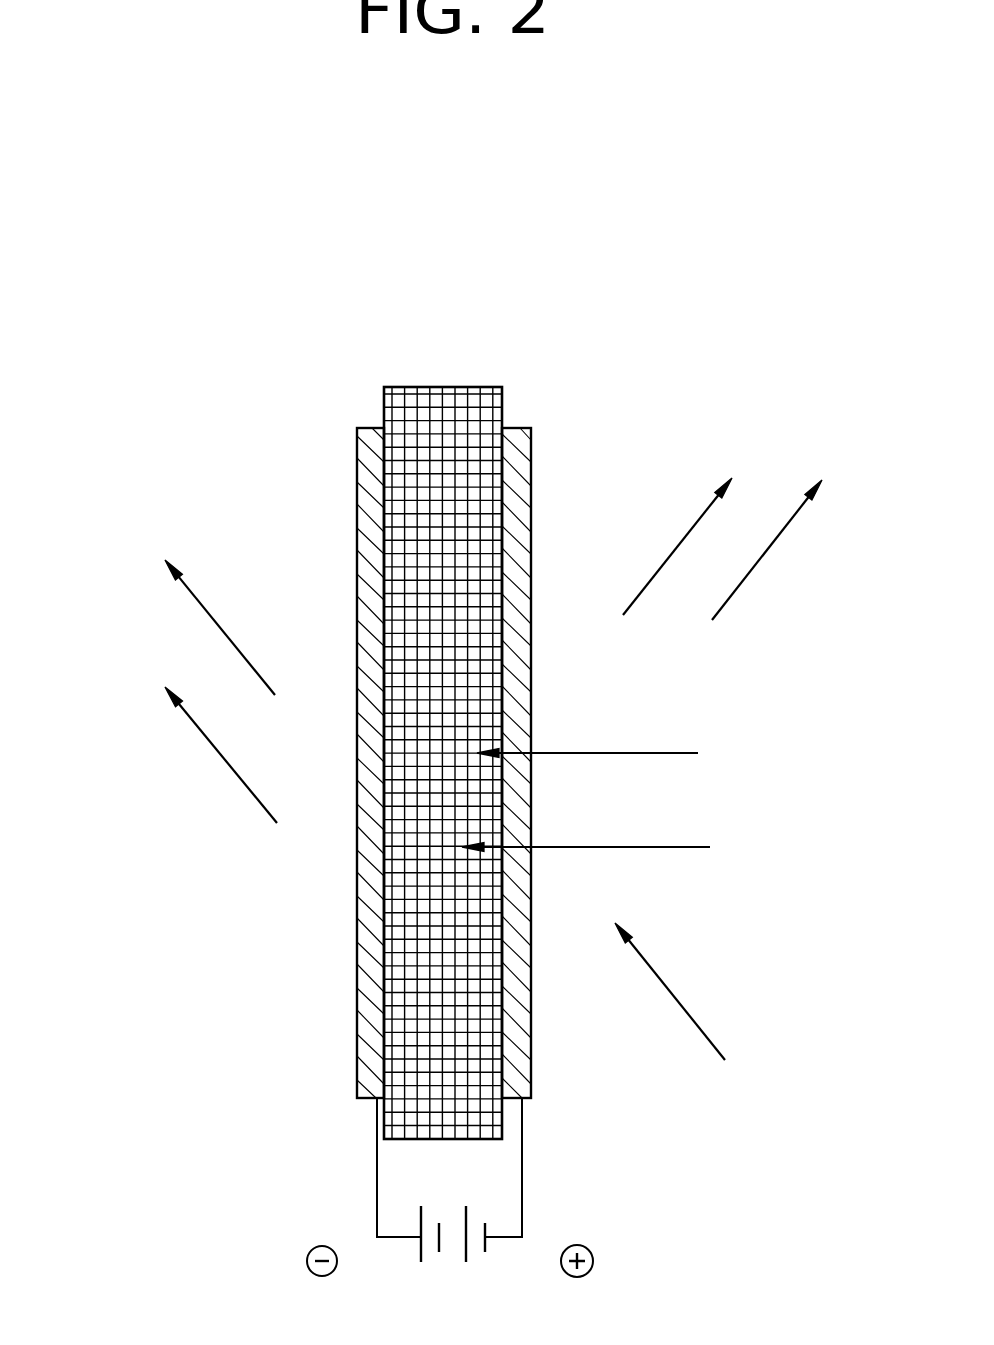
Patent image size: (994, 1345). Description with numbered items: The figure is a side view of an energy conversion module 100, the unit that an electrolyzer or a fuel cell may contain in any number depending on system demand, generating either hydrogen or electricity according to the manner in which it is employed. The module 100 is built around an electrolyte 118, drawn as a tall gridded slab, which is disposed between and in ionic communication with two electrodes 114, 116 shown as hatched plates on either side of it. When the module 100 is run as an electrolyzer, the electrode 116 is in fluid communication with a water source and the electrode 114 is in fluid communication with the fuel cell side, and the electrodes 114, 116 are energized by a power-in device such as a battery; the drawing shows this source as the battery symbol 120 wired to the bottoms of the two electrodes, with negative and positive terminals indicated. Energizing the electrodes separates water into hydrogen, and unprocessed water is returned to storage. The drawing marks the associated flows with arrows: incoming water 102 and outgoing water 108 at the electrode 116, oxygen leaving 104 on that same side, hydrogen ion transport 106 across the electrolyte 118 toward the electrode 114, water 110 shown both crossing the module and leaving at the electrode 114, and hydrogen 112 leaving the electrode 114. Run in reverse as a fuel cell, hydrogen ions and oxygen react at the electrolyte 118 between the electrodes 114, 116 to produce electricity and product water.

The energy conversion module 100 is at (600, 417).
The water inlet flow 102 is at (668, 995).
The oxygen outlet flow 104 is at (681, 540).
The proton transport through membrane 106 is at (578, 752).
The water outlet flow on anode side 108 is at (767, 555).
The water flow on cathode side 110 is at (200, 732).
The hydrogen outlet flow 112 is at (238, 645).
The electrode 114 is at (357, 442).
The electrode 116 is at (531, 460).
The electrolyte 118 is at (448, 386).
The power supply 120 is at (582, 1170).